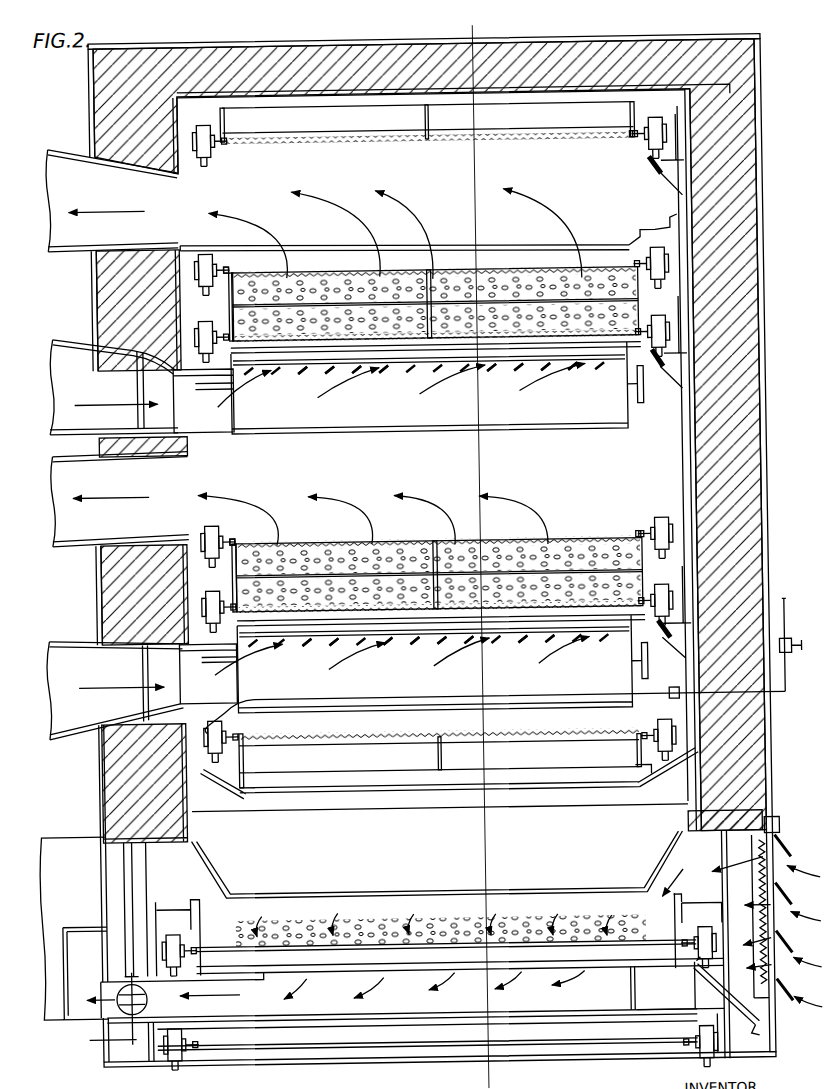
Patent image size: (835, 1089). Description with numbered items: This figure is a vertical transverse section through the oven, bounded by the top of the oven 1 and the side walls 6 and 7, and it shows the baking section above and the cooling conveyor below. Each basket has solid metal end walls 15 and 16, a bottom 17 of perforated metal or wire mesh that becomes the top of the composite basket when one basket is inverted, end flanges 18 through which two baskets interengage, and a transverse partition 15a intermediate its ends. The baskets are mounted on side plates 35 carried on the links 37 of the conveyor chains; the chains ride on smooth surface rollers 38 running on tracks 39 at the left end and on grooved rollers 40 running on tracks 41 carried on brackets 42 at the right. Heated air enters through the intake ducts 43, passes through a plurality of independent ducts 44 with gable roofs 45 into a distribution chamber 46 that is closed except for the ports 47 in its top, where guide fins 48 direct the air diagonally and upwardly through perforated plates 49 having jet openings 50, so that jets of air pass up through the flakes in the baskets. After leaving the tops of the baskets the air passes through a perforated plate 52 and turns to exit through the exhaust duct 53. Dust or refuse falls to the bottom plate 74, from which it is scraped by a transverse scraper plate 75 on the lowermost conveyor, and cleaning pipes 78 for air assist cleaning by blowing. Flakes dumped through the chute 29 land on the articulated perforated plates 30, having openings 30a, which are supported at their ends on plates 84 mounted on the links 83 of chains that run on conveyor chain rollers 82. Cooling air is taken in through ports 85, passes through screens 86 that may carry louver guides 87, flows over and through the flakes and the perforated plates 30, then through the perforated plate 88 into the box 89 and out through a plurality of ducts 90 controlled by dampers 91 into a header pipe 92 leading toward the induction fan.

The top of the oven 1 is at (333, 61).
The side wall 6 is at (100, 274).
The side wall 7 is at (746, 378).
The end wall 15 is at (636, 118).
The transverse partition 15a is at (431, 133).
The end wall 16 is at (235, 115).
The basket bottom 17 is at (318, 140).
The flange 18 is at (218, 298).
The chute 29 is at (222, 873).
The articulated perforated plate 30 is at (344, 950).
The opening 30a is at (400, 944).
The side plate 35 is at (638, 140).
The link 37 is at (214, 252).
The smooth surface roller 38 is at (214, 252).
The track 39 is at (216, 153).
The grooved roller 40 is at (662, 122).
The track 41 is at (656, 163).
The bracket 42 is at (676, 178).
The intake duct 43 is at (72, 342).
The independent duct 44 is at (203, 414).
The gable roof 45 is at (238, 381).
The distribution chamber 46 is at (402, 414).
The port 47 is at (318, 368).
The guide fin 48 is at (356, 367).
The perforated plate 49 is at (556, 367).
The jet opening 50 is at (534, 367).
The perforated plate 52 is at (502, 242).
The exhaust duct 53 is at (74, 148).
The bottom plate 74 is at (556, 795).
The scraper plate 75 is at (438, 792).
The cleaning pipe 78 is at (585, 696).
The conveyor chain roller 82 is at (168, 928).
The link 83 is at (188, 1056).
The plate 84 is at (193, 949).
The port 85 is at (770, 850).
The screen 86 is at (772, 832).
The louver guide 87 is at (785, 898).
The perforated plate 88 is at (655, 985).
The box 89 is at (618, 1003).
The duct 90 is at (252, 997).
The damper 91 is at (137, 990).
The header pipe 92 is at (90, 925).